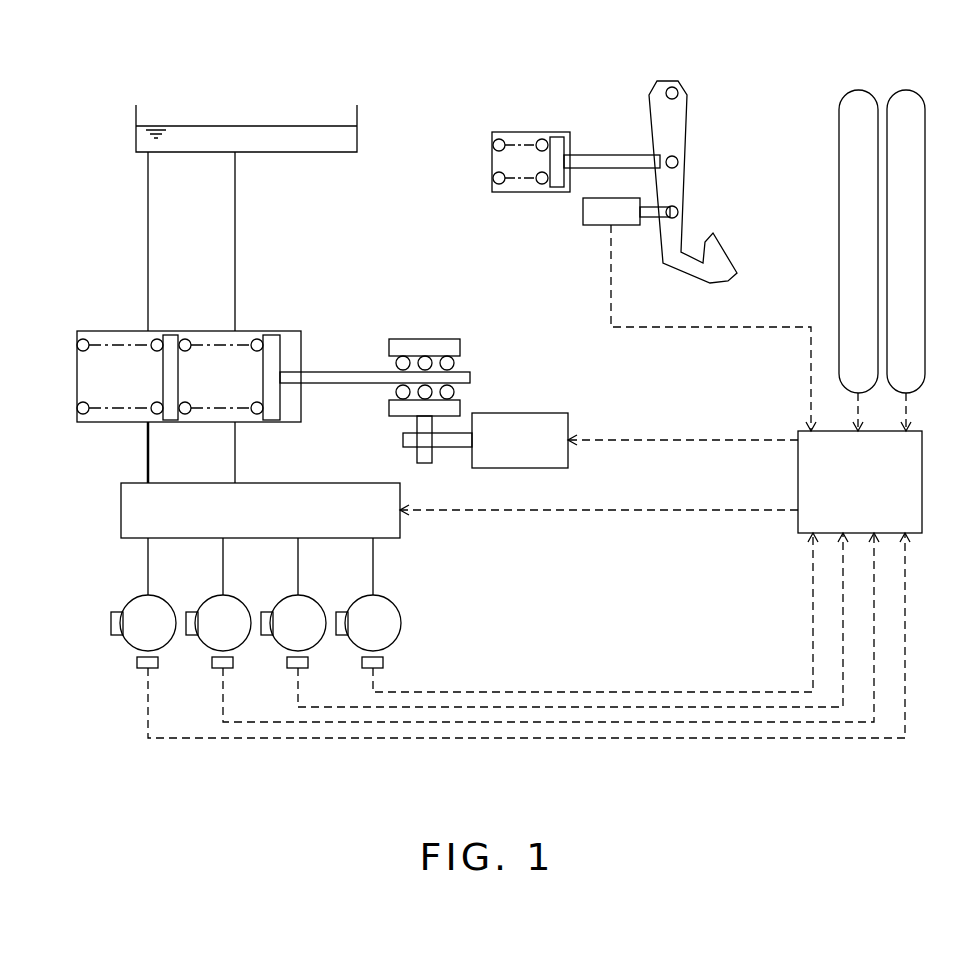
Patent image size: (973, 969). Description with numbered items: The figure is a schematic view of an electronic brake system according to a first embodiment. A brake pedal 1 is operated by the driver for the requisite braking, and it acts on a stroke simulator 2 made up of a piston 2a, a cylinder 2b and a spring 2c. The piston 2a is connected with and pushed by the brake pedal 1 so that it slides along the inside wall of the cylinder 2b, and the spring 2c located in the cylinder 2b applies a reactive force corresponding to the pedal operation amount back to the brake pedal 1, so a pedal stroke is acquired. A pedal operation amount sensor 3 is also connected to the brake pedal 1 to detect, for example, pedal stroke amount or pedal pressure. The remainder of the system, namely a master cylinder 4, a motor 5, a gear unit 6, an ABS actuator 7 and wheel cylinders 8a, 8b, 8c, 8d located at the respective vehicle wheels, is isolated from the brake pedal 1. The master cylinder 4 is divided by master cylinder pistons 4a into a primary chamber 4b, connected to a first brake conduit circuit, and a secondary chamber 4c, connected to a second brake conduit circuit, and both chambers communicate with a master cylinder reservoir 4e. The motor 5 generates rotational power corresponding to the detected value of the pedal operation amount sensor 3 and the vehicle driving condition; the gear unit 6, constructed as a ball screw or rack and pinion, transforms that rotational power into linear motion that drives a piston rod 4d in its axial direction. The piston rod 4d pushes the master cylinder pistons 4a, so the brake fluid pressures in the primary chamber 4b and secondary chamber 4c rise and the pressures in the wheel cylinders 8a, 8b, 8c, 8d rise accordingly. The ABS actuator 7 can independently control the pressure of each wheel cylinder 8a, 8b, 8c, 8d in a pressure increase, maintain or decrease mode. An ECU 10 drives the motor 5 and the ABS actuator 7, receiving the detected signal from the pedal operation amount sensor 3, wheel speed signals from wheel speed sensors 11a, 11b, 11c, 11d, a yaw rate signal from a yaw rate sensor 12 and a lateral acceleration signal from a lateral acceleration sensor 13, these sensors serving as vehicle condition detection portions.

The brake pedal 1 is at (730, 262).
The stroke simulator 2 is at (501, 120).
The piston 2a is at (597, 155).
The cylinder 2b is at (525, 134).
The spring 2c is at (492, 165).
The pedal operation amount sensor 3 is at (592, 225).
The master cylinder 4 is at (102, 321).
The master cylinder pistons 4a is at (171, 332).
The primary chamber 4b is at (117, 386).
The secondary chamber 4c is at (222, 386).
The piston rod 4d is at (344, 390).
The master cylinder reservoir 4e is at (256, 126).
The motor 5 is at (540, 413).
The gear unit 6 is at (472, 343).
The ABS actuator 7 is at (400, 532).
The wheel cylinder 8a is at (112, 613).
The wheel cylinder 8b is at (188, 613).
The wheel cylinder 8c is at (263, 613).
The wheel cylinder 8d is at (338, 613).
The ECU 10 is at (798, 527).
The wheel speed sensor 11a is at (137, 663).
The wheel speed sensor 11b is at (212, 663).
The wheel speed sensor 11c is at (287, 663).
The wheel speed sensor 11d is at (362, 663).
The yaw rate sensor 12 is at (856, 90).
The lateral acceleration sensor 13 is at (905, 90).